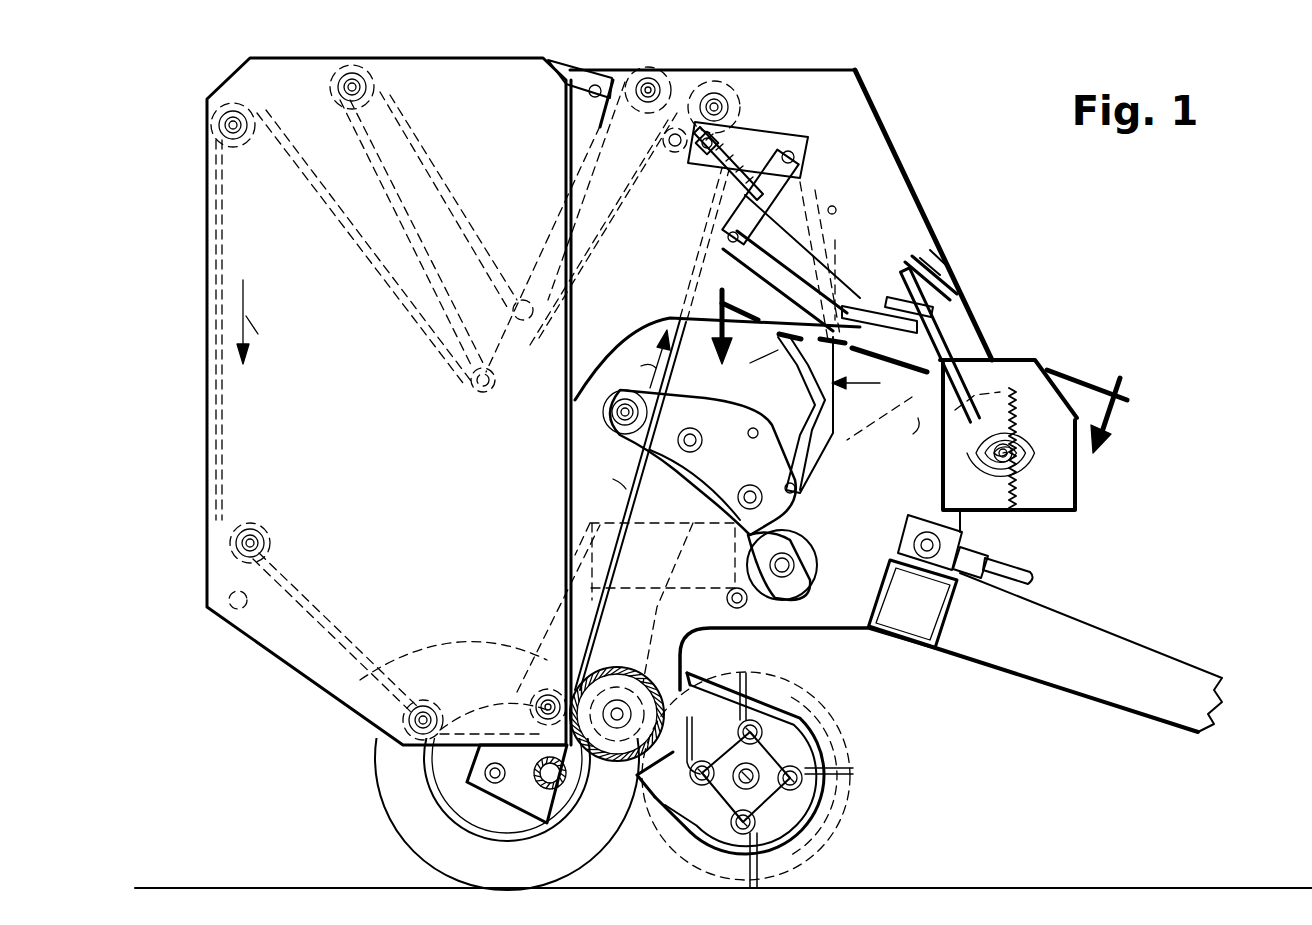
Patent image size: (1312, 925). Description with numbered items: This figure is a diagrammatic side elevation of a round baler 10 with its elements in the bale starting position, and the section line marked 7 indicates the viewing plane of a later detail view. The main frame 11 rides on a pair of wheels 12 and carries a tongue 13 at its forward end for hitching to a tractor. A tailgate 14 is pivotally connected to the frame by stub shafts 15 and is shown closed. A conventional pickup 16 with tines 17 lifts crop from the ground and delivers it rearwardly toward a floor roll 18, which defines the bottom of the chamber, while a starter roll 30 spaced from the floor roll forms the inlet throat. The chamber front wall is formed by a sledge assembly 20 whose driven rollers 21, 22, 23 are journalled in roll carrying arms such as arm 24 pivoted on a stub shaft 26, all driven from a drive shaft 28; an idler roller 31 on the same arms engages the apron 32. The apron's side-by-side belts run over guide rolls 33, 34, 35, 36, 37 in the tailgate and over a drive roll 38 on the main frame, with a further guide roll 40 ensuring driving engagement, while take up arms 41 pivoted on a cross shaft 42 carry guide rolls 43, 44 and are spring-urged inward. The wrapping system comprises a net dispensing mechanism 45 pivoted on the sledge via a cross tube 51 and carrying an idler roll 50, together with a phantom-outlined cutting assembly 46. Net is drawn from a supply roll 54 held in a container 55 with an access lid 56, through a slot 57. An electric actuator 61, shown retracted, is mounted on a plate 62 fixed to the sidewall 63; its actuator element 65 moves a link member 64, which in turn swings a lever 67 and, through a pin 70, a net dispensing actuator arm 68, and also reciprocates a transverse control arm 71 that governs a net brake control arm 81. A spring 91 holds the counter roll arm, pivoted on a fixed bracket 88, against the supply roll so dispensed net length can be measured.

The round baler 10 is at (1045, 240).
The main frame 11 is at (690, 634).
The wheels 12 is at (378, 810).
The tongue 13 is at (1118, 650).
The tailgate 14 is at (460, 58).
The stub shafts 15 is at (588, 90).
The pickup 16 is at (868, 756).
The tines 17 is at (848, 782).
The floor roll 18 is at (593, 808).
The sledge assembly 20 is at (615, 449).
The roller 21 is at (684, 457).
The roller 22 is at (735, 509).
The roller 23 is at (750, 550).
The roll carrying arm 24 is at (790, 527).
The stub shaft 26 is at (805, 576).
The drive shaft 28 is at (1020, 568).
The starter roll 30 is at (750, 608).
The idler roller 31 is at (612, 394).
The apron 32 is at (218, 385).
The guide roll 33 is at (548, 690).
The guide roll 34 is at (422, 700).
The guide roll 35 is at (250, 528).
The guide roll 36 is at (246, 141).
The guide roll 37 is at (340, 100).
The drive roll 38 is at (718, 90).
The guide roll 40 is at (650, 74).
The take up arms 41 is at (550, 230).
The cross shaft 42 is at (640, 76).
The guide roll 43 is at (488, 392).
The guide roll 44 is at (516, 300).
The net dispensing mechanism 45 is at (894, 384).
The cutting assembly 46 is at (890, 260).
The idler roll 50 is at (825, 448).
The cross tube 51 is at (755, 428).
The supply roll 54 is at (1060, 470).
The container 55 is at (1078, 500).
The access lid 56 is at (1048, 368).
The slot 57 is at (940, 388).
The electric actuator 61 is at (720, 136).
The plate 62 is at (780, 126).
The sidewall 63 is at (838, 155).
The link member 64 is at (772, 190).
The actuator element 65 is at (730, 200).
The lever 67 is at (830, 184).
The net dispensing actuator arm 68 is at (838, 234).
The pin 70 is at (838, 210).
The control arm 71 is at (740, 250).
The net brake control arm 81 is at (975, 343).
The fixed bracket 88 is at (999, 494).
The spring 91 is at (1008, 500).
The section line 7 is at (920, 365).